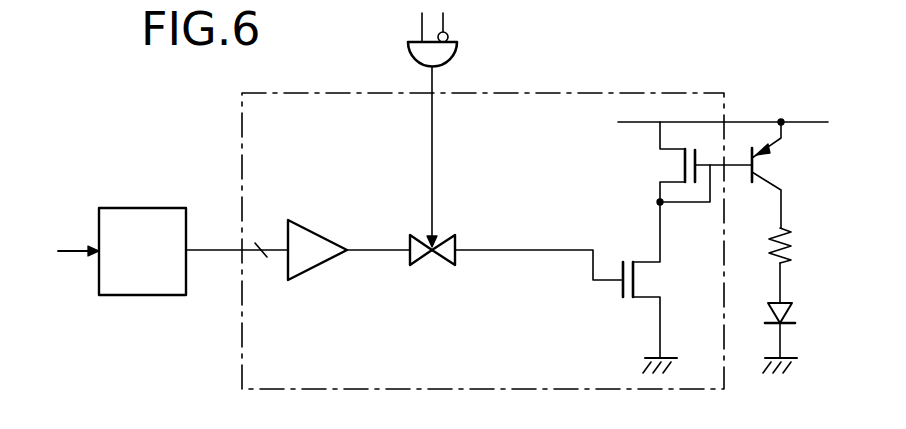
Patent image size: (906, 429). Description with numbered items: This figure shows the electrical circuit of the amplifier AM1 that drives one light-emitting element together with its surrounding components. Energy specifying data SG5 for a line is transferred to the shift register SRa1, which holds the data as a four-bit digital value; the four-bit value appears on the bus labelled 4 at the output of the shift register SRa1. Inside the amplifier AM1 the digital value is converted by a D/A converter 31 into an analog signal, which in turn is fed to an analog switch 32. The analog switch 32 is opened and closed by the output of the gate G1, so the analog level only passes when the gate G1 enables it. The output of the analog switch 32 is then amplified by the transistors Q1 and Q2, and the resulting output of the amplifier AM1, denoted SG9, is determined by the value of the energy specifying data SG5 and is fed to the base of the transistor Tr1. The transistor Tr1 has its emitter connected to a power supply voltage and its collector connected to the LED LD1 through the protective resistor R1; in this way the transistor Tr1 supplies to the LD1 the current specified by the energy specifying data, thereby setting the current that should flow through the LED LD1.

The amplifier AM1 is at (585, 92).
The shift register SRa1 is at (142, 251).
The energy specifying data SG5 is at (68, 241).
The data bus 4 is at (237, 262).
The D/A converter 31 is at (323, 235).
The analog switch 32 is at (456, 236).
The gate G1 is at (448, 130).
The transistor Q2 is at (612, 290).
The transistor Q1 is at (668, 164).
The drive signal SG9 is at (734, 148).
The transistor Tr1 is at (781, 164).
The protective resistor R1 is at (797, 242).
The LED LD1 is at (797, 314).